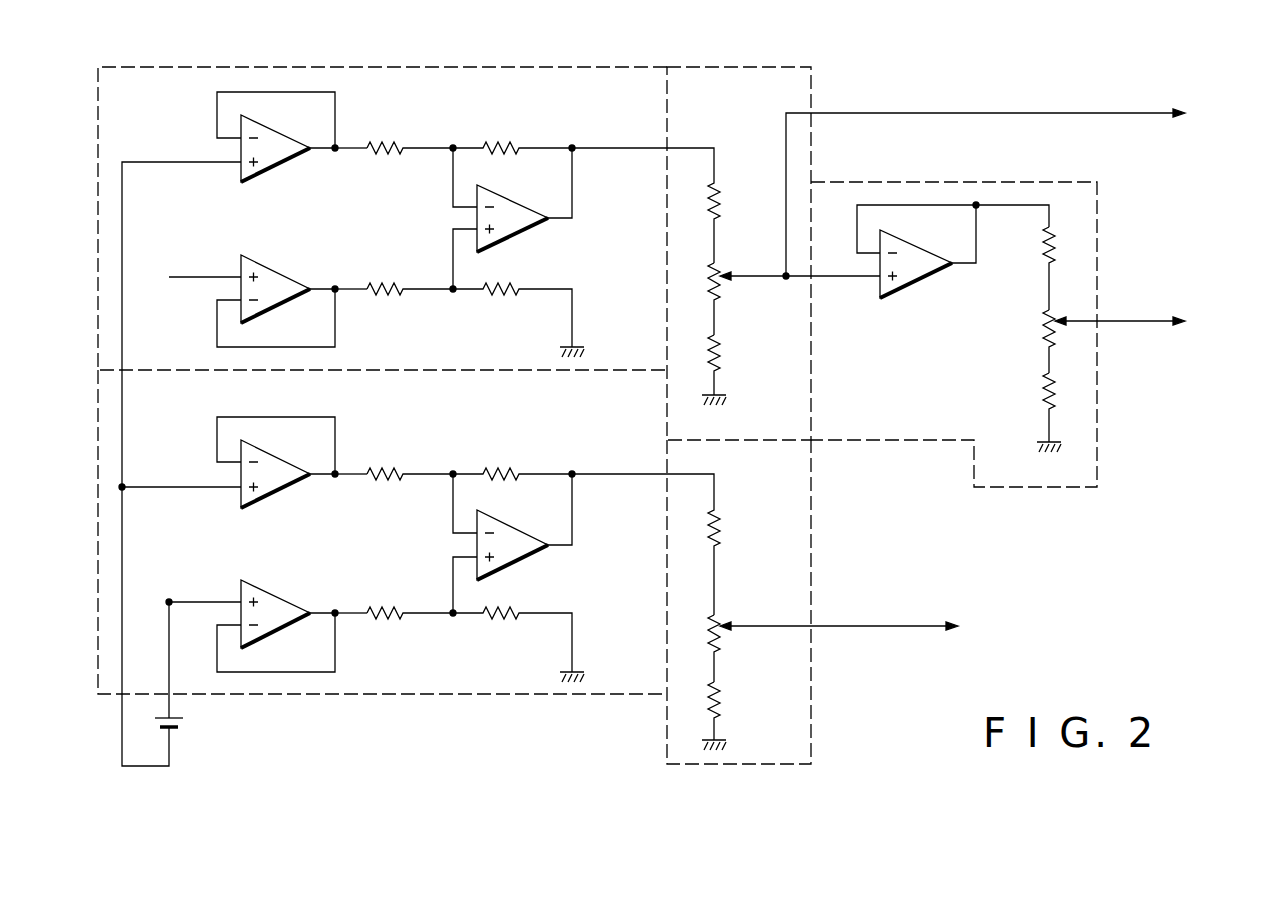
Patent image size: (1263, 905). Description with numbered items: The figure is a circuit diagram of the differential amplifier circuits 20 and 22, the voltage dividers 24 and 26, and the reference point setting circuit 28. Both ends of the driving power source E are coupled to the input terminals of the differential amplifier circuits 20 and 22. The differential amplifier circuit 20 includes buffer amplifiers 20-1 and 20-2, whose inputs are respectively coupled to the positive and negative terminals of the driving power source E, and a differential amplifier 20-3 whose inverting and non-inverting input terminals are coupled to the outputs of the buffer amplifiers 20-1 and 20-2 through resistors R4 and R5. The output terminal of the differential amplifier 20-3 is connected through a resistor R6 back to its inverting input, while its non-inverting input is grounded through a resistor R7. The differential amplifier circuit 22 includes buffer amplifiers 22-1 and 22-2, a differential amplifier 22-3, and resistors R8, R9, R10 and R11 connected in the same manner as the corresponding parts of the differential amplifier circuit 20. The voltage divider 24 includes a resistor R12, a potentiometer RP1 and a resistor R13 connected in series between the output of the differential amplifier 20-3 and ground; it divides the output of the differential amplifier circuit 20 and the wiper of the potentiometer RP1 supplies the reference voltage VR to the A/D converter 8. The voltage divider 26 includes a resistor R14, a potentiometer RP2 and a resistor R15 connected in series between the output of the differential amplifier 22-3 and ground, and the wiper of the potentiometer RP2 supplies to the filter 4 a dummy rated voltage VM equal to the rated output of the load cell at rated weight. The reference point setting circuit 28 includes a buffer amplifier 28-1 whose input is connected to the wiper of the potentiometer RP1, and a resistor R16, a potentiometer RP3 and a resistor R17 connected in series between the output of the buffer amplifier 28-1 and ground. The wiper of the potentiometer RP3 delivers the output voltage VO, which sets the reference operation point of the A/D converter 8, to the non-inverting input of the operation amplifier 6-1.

The differential amplifier circuit 20 is at (435, 64).
The differential amplifier circuit 22 is at (425, 698).
The voltage divider 24 is at (811, 88).
The voltage divider 26 is at (811, 541).
The reference point setting circuit 28 is at (1045, 497).
The buffer amplifier 20-1 is at (293, 165).
The buffer amplifier 20-2 is at (283, 274).
The differential amplifier 20-3 is at (522, 232).
The buffer amplifier 22-1 is at (276, 492).
The buffer amplifier 22-2 is at (288, 599).
The differential amplifier 22-3 is at (519, 560).
The buffer amplifier 28-1 is at (916, 284).
The resistor R4 is at (388, 141).
The resistor R5 is at (389, 281).
The resistor R6 is at (511, 141).
The resistor R7 is at (505, 297).
The resistor R8 is at (384, 483).
The resistor R9 is at (390, 622).
The resistor R10 is at (509, 467).
The resistor R11 is at (497, 622).
The resistor R12 is at (721, 200).
The resistor R13 is at (722, 355).
The resistor R14 is at (721, 528).
The resistor R15 is at (722, 700).
The resistor R16 is at (1043, 244).
The resistor R17 is at (1040, 386).
The potentiometer RP1 is at (722, 290).
The potentiometer RP2 is at (722, 634).
The potentiometer RP3 is at (1040, 331).
The driving power source E is at (180, 728).
The reference voltage VR is at (1056, 111).
The dummy rated voltage VM is at (880, 624).
The output voltage VO is at (1141, 319).
The A/D converter 8 is at (1168, 142).
The filter 4 is at (1039, 630).
The operation amplifier 6-1 is at (1206, 353).